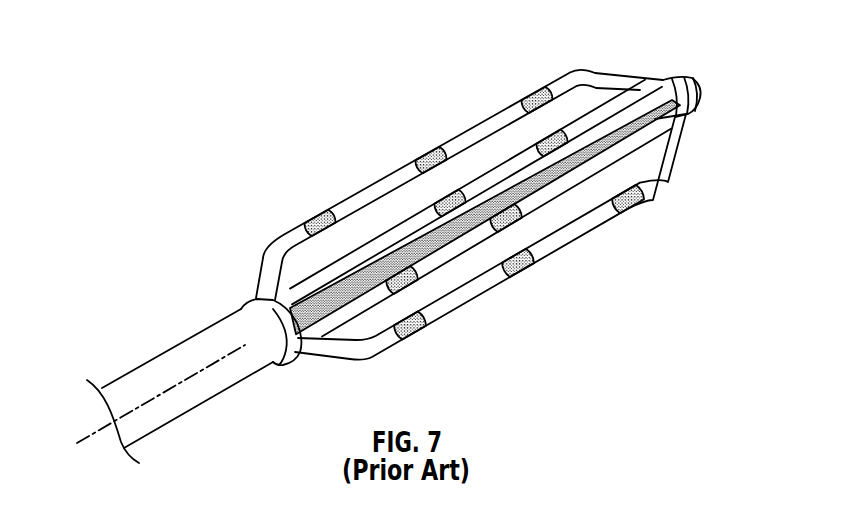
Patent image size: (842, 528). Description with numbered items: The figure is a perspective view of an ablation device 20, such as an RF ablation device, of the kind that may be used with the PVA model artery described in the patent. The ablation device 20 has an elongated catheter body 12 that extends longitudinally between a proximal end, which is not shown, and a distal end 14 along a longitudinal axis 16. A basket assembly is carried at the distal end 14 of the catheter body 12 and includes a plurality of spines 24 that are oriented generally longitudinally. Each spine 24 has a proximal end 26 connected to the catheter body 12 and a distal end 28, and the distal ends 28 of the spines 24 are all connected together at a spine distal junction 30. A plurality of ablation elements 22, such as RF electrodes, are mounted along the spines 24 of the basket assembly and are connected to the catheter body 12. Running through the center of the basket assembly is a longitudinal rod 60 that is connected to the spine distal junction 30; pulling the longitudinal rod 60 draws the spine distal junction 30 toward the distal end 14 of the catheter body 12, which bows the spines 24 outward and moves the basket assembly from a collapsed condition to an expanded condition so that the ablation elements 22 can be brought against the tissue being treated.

The ablation device 20 is at (176, 115).
The elongated catheter body 12 is at (158, 355).
The longitudinal axis 16 is at (130, 412).
The distal end 14 is at (278, 363).
The proximal end 26 is at (251, 293).
The spine 24 is at (467, 127).
The ablation element 22 is at (423, 152).
The longitudinal rod 60 is at (543, 182).
The distal end 28 is at (692, 124).
The spine distal junction 30 is at (667, 78).